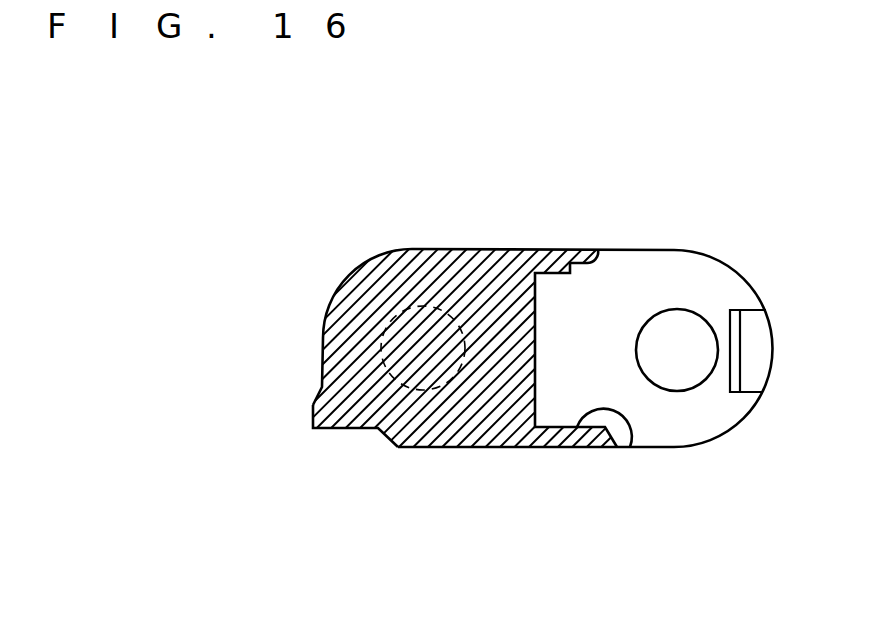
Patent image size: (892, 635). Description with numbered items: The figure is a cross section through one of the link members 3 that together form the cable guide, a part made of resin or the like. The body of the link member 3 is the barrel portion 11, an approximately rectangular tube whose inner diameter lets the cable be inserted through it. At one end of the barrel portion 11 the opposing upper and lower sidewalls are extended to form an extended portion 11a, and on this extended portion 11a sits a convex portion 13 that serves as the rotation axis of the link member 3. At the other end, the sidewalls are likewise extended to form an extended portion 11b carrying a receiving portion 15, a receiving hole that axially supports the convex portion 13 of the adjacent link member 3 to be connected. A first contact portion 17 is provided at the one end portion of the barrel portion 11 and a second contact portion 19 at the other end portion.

The link member 3 is at (177, 219).
The barrel portion 11 is at (509, 250).
The extended portion 11a is at (373, 258).
The extended portion 11b is at (695, 252).
The convex portion 13 is at (383, 364).
The receiving portion 15 is at (700, 388).
The first contact portion 17 is at (345, 430).
The second contact portion 19 is at (628, 438).